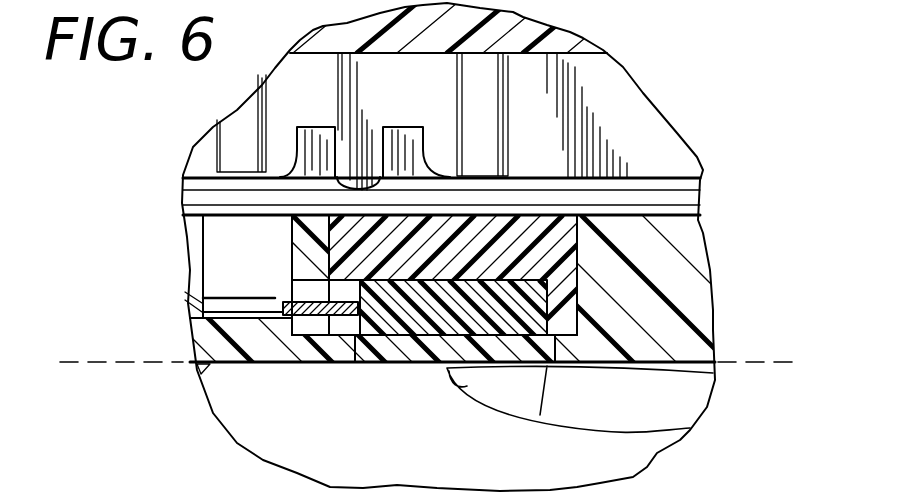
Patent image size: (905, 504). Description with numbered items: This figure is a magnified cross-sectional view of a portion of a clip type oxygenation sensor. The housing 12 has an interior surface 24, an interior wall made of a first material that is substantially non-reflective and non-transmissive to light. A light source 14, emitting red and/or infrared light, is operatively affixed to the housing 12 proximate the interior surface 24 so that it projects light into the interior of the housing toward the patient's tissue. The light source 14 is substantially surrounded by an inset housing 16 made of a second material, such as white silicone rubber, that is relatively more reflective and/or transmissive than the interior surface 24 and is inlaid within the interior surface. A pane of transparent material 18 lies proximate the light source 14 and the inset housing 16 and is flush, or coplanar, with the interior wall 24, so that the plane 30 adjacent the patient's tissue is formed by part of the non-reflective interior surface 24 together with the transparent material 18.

The housing 12 is at (693, 234).
The light source 14 is at (416, 319).
The inset housing 16 is at (343, 246).
The transparent material 18 is at (378, 345).
The interior surface 24 is at (580, 399).
The plane 30 is at (774, 324).